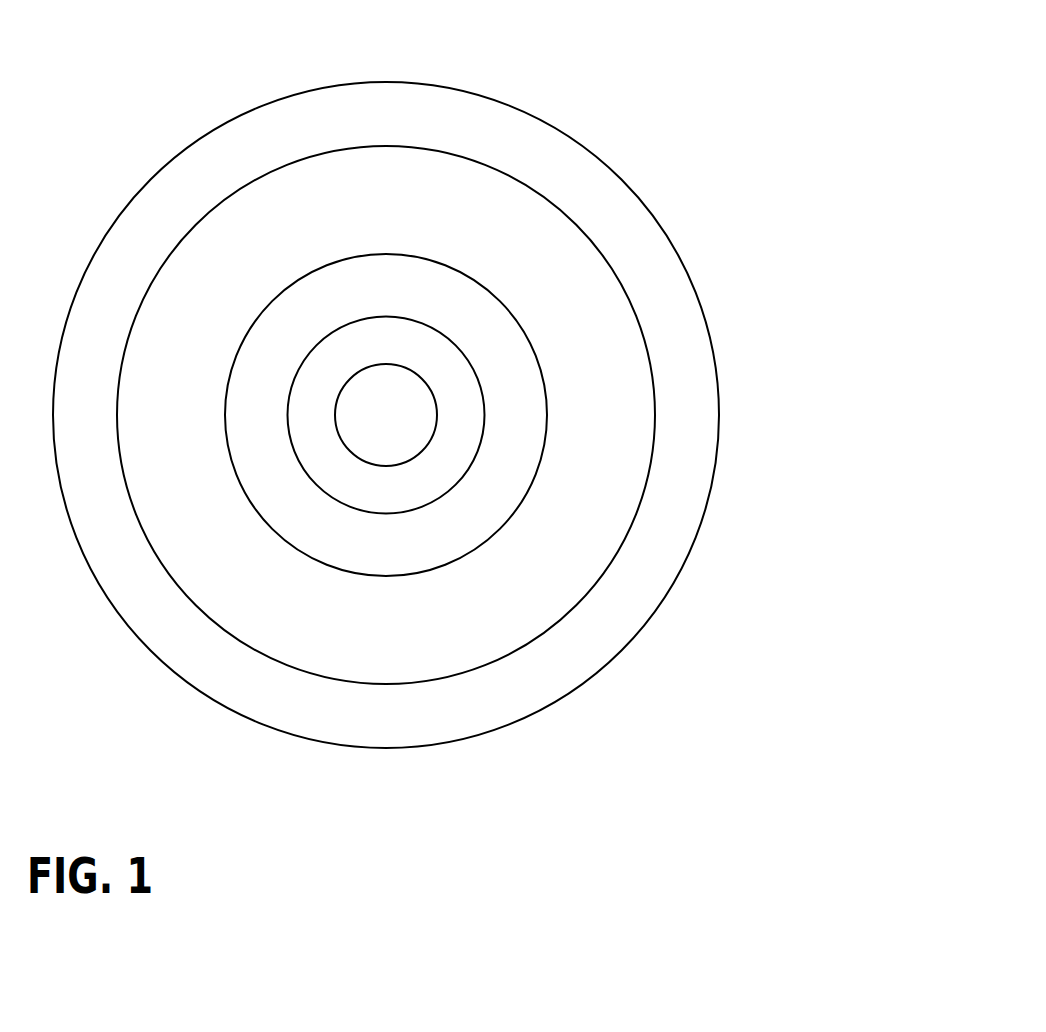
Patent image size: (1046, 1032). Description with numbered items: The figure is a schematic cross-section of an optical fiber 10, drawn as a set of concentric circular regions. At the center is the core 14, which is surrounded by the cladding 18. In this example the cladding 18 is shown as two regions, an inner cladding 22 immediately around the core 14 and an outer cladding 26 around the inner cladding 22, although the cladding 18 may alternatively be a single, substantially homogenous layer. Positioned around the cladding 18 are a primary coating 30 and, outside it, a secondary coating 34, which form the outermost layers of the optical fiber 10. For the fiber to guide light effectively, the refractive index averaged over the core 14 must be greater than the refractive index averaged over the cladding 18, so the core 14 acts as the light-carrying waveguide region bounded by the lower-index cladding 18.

The optical fiber 10 is at (558, 70).
The core 14 is at (372, 388).
The cladding 18 is at (836, 177).
The inner cladding 22 is at (442, 363).
The outer cladding 26 is at (510, 385).
The primary coating 30 is at (565, 538).
The secondary coating 34 is at (617, 610).